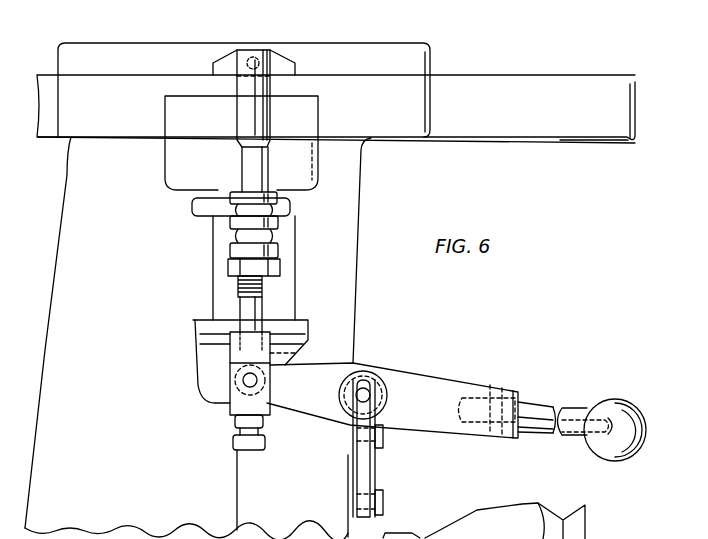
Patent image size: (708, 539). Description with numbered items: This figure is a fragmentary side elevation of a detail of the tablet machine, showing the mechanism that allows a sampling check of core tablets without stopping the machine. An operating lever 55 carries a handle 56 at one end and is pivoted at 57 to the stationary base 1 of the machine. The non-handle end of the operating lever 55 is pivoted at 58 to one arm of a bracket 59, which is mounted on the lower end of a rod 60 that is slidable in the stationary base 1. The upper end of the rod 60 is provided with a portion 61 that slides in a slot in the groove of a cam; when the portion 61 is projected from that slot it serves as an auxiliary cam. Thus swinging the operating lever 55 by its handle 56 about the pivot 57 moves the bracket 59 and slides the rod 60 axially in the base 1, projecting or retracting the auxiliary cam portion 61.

The stationary base 1 is at (350, 345).
The operating lever 55 is at (470, 393).
The handle 56 is at (573, 412).
The pivot 57 is at (370, 393).
The pivot 58 is at (245, 383).
The bracket 59 is at (267, 405).
The rod 60 is at (258, 317).
The portion 61 is at (275, 60).